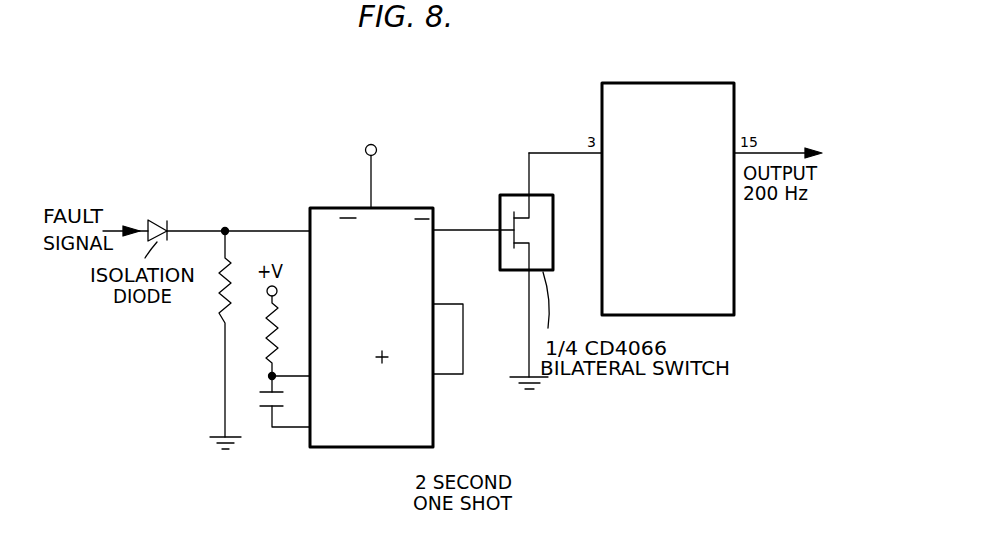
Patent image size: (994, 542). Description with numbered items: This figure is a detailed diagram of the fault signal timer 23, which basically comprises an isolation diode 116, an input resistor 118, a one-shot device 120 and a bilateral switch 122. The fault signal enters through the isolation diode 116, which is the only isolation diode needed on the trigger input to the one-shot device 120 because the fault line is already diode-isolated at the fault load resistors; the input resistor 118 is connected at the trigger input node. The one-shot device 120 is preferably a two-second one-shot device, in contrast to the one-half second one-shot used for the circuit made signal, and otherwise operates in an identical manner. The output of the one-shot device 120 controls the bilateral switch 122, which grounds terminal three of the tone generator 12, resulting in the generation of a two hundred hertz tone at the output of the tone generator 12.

The tone generator 12 is at (707, 318).
The fault signal timer 23 is at (508, 107).
The isolation diode 116 is at (158, 218).
The input resistor 118 is at (220, 323).
The one-shot device 120 is at (357, 438).
The bilateral switch 122 is at (512, 262).